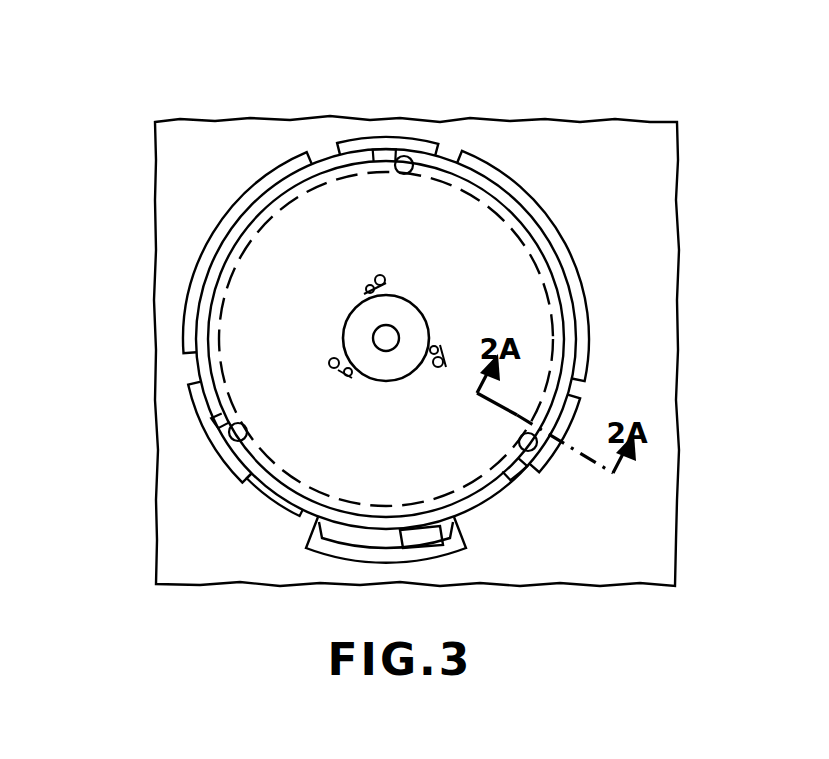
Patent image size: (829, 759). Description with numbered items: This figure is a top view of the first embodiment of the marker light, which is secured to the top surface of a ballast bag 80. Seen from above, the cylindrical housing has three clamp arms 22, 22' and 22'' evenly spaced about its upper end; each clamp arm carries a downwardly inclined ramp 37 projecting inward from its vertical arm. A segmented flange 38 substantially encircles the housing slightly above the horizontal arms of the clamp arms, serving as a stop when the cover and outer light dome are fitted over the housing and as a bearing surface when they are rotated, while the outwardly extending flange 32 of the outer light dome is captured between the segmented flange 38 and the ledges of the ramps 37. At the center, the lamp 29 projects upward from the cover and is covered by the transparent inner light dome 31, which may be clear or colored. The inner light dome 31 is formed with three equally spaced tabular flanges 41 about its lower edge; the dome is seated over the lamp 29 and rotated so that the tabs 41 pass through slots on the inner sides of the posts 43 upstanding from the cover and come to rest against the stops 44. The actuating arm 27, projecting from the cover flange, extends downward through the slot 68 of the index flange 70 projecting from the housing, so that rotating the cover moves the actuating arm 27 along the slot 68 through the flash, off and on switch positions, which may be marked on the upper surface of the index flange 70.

The ballast bag 80 is at (590, 165).
The outwardly extending flange 32 is at (578, 309).
The segmented flange 38 is at (368, 288).
The clamp arm 22 is at (631, 419).
The clamp arm 22' is at (387, 104).
The clamp arm 22'' is at (160, 425).
The stop 44 is at (370, 280).
The downwardly inclined ramp 37 is at (450, 162).
The inner light dome 31 is at (347, 300).
The lamp 29 is at (390, 337).
The post 43 is at (380, 278).
The tabular flange 41 is at (397, 283).
The index flange 70 is at (355, 561).
The slot 68 is at (327, 527).
The actuating arm 27 is at (420, 378).